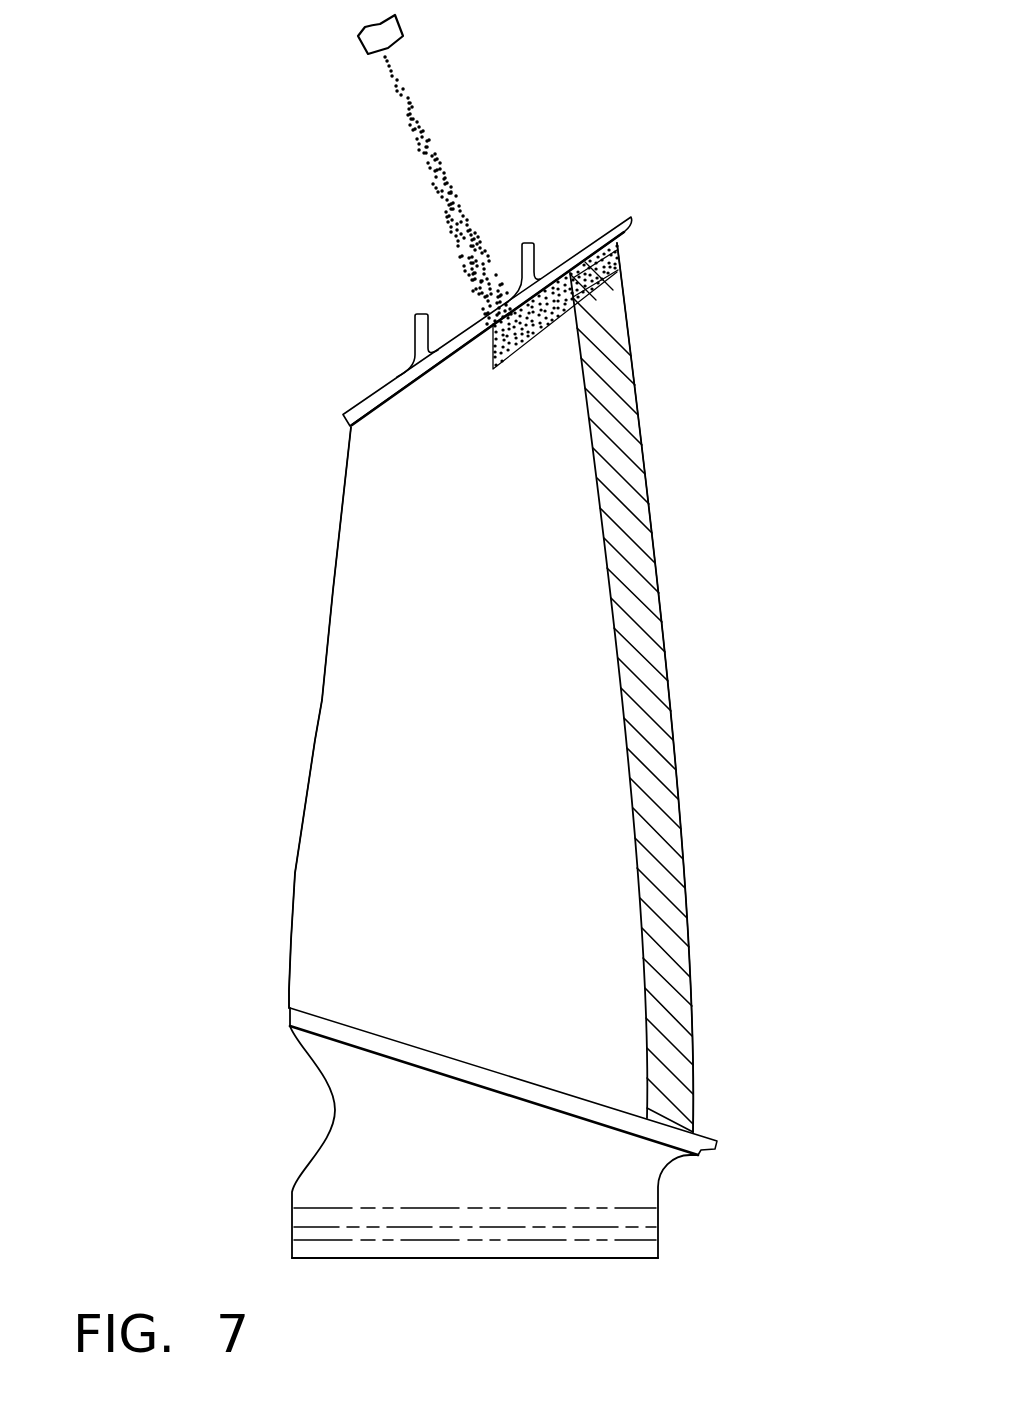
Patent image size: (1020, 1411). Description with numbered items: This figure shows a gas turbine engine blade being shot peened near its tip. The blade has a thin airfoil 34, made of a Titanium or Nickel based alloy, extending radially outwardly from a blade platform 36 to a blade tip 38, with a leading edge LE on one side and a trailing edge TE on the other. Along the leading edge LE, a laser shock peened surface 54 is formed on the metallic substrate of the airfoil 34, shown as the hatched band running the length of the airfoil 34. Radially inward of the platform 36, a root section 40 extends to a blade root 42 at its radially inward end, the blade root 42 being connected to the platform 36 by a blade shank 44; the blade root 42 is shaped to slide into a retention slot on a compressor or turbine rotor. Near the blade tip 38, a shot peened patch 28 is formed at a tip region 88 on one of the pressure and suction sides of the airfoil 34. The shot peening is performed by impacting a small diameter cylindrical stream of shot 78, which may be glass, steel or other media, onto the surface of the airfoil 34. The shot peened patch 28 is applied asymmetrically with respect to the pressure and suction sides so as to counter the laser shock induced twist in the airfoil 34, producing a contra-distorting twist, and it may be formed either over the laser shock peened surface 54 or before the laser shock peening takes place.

The shot peened patch 28 is at (568, 262).
The airfoil 34 is at (543, 407).
The blade platform 36 is at (710, 1136).
The blade tip 38 is at (565, 308).
The root section 40 is at (687, 1200).
The blade root 42 is at (660, 1245).
The blade shank 44 is at (400, 1123).
The laser shock peened surface 54 is at (628, 573).
The stream of shot 78 is at (437, 180).
The tip region 88 is at (523, 348).
The leading edge LE is at (643, 482).
The trailing edge TE is at (333, 596).